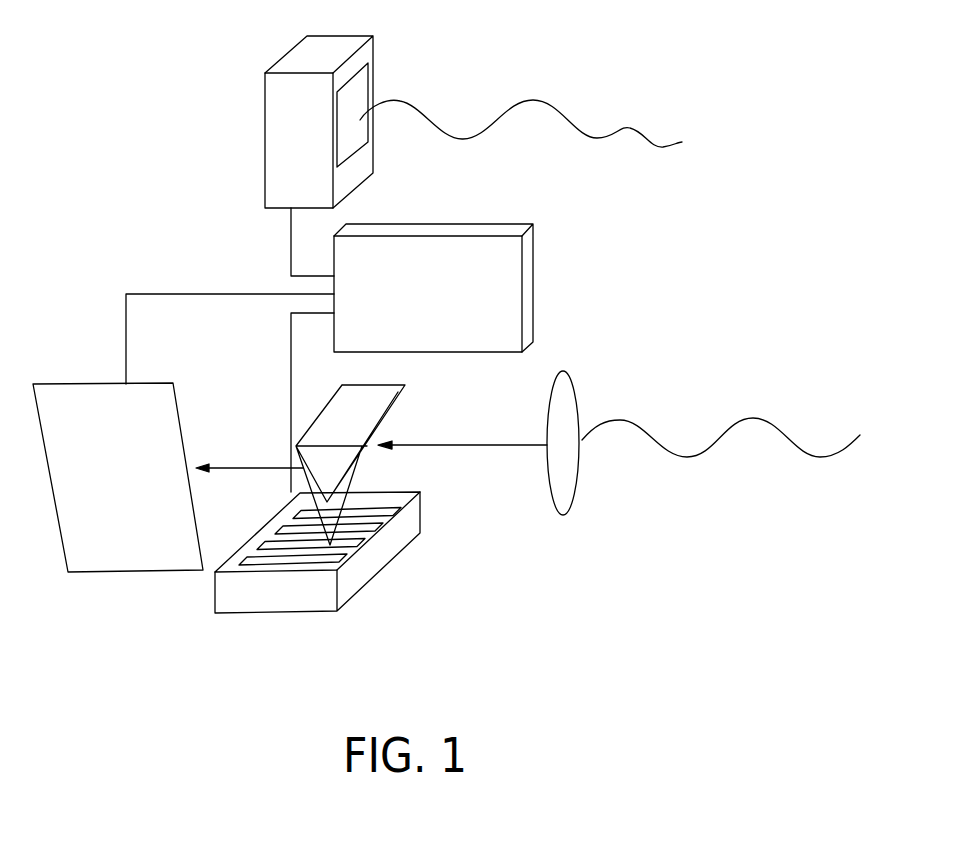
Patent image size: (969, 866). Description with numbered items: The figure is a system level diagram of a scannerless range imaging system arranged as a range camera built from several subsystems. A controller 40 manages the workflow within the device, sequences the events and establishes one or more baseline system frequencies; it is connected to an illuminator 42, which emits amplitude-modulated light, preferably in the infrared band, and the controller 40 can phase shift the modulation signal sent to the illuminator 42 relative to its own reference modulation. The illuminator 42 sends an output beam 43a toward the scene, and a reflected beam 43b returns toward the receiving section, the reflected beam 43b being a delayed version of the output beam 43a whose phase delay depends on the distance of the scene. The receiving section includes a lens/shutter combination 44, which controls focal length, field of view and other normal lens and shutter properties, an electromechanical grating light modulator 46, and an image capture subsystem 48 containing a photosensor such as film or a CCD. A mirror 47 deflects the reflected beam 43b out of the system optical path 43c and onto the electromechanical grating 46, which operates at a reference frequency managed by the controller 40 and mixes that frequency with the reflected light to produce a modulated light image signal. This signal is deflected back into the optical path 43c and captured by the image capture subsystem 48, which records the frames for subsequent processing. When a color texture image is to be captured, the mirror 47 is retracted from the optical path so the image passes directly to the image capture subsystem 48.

The controller 40 is at (533, 288).
The illuminator 42 is at (265, 158).
The output beam 43a is at (545, 130).
The reflected beam 43b is at (817, 457).
The system optical path 43c is at (238, 468).
The lens/shutter combination 44 is at (563, 515).
The electromechanical grating light modulator 46 is at (357, 593).
The mirror 47 is at (405, 385).
The image capture subsystem 48 is at (60, 384).